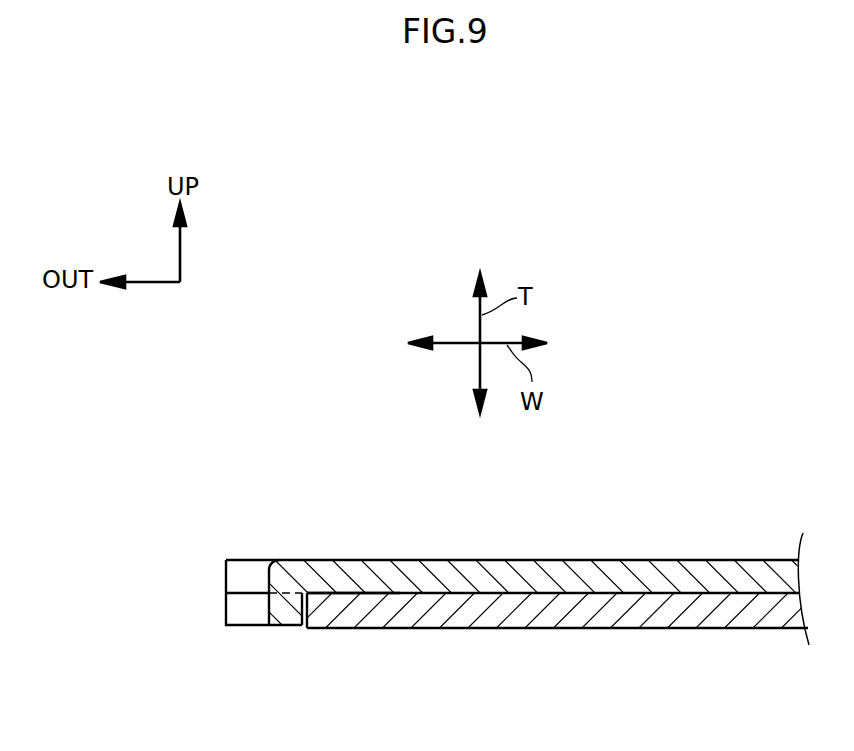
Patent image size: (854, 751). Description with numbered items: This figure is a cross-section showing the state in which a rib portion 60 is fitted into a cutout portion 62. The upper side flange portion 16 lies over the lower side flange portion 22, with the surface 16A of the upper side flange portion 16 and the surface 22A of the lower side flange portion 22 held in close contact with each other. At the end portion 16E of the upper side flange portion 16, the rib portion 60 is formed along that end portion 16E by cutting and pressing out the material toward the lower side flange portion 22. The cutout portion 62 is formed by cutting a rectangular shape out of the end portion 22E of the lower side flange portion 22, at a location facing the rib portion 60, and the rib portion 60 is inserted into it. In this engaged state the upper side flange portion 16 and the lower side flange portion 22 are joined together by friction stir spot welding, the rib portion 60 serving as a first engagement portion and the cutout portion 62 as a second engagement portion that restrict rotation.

The upper side flange portion 16 is at (628, 560).
The surface of upper side flange portion 16A is at (560, 593).
The end portion of upper side flange portion 16E is at (245, 558).
The lower side flange portion 22 is at (660, 628).
The surface of lower side flange portion 22A is at (474, 594).
The end portion of lower side flange portion 22E is at (232, 626).
The rib portion 60 is at (270, 607).
The cutout portion 62 is at (302, 616).